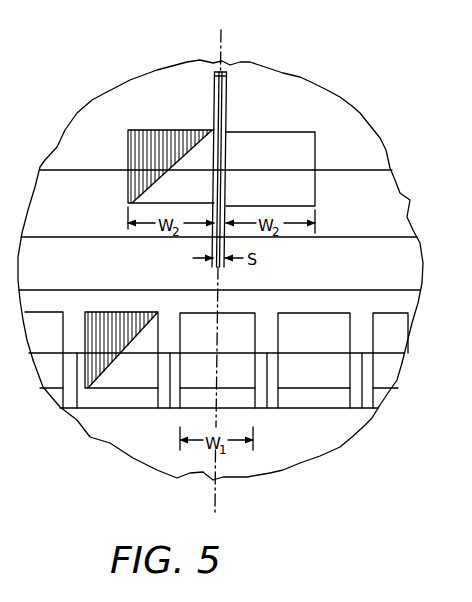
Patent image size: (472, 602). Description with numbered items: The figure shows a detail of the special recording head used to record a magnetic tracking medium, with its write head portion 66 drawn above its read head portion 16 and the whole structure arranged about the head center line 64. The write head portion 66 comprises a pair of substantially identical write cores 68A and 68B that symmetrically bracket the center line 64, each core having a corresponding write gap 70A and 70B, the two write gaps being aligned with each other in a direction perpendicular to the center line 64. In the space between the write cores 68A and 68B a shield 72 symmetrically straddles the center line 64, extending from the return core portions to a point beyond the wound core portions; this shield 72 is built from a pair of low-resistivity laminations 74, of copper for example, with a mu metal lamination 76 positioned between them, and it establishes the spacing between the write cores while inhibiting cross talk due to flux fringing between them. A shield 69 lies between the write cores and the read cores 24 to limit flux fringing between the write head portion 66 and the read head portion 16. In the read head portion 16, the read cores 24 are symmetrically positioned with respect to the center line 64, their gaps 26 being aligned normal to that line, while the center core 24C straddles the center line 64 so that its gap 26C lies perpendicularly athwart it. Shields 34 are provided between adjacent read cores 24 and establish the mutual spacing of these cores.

The read head portion 16 is at (340, 436).
The read cores 24 is at (92, 327).
The center read core 24C is at (245, 315).
The read gaps 26 is at (115, 360).
The center read gap 26C is at (200, 350).
The shields 34 is at (167, 408).
The center line 64 is at (216, 280).
The write head portion 66 is at (382, 227).
The write core 68A is at (137, 141).
The write core 68B is at (302, 146).
The shield 69 is at (408, 268).
The write gap 70A is at (143, 171).
The write gap 70B is at (292, 172).
The shield 72 is at (231, 77).
The low-resistivity laminations 74 is at (214, 91).
The mu metal lamination 76 is at (217, 71).